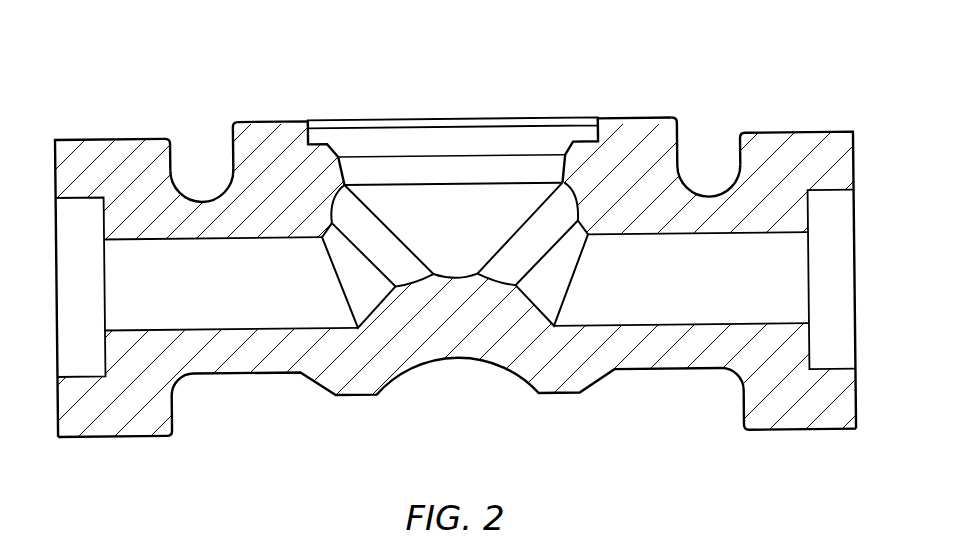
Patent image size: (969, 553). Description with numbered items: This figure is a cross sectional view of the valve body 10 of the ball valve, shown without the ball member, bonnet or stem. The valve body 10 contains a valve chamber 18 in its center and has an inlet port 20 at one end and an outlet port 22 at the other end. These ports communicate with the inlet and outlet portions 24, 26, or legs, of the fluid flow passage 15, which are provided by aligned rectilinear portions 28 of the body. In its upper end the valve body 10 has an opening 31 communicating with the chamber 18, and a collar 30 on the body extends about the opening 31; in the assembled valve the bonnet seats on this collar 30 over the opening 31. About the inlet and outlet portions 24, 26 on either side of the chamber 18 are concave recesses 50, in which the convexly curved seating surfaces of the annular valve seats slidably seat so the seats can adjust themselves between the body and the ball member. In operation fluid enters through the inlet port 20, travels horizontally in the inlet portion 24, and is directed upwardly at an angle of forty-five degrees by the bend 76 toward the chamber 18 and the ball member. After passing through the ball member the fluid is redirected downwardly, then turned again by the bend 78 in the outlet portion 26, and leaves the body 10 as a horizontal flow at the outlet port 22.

The valve body 10 is at (658, 115).
The fluid flow passage 15 is at (748, 290).
The valve chamber 18 is at (443, 208).
The inlet port 20 is at (57, 320).
The outlet port 22 is at (853, 333).
The inlet portion 24 is at (217, 285).
The outlet portion 26 is at (688, 292).
The rectilinear portions 28 is at (63, 148).
The collar 30 is at (239, 145).
The opening 31 is at (566, 120).
The concave recesses 50 is at (412, 290).
The bend 76 is at (355, 330).
The bend 78 is at (557, 325).